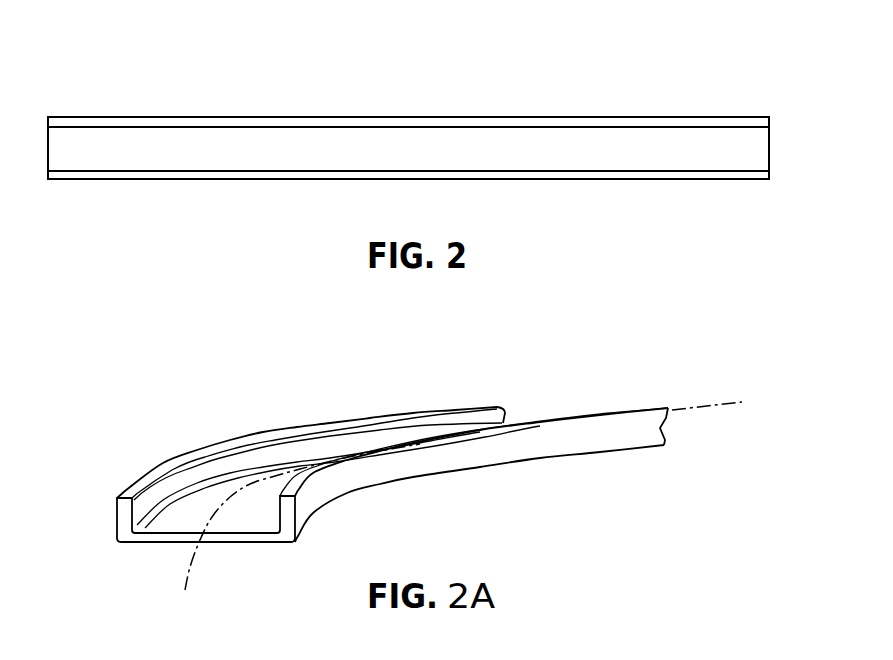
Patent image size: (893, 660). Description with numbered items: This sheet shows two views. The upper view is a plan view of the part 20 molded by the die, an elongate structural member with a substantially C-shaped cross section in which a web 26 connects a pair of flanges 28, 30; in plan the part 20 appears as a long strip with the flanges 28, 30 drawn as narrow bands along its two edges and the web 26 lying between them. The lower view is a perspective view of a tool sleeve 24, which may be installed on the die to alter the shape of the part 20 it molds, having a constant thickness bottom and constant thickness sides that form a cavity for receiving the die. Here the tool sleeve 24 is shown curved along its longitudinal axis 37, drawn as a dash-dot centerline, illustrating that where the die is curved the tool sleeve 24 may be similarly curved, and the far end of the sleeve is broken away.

In FIG. 2, the part 20 is at (70, 98).
In FIG. 2, the flange 28 is at (319, 124).
In FIG. 2, the web 26 is at (243, 157).
In FIG. 2, the flange 30 is at (119, 178).
In FIG. 2A, the tool sleeve 24 is at (160, 440).
In FIG. 2A, the longitudinal axis 37 is at (188, 575).